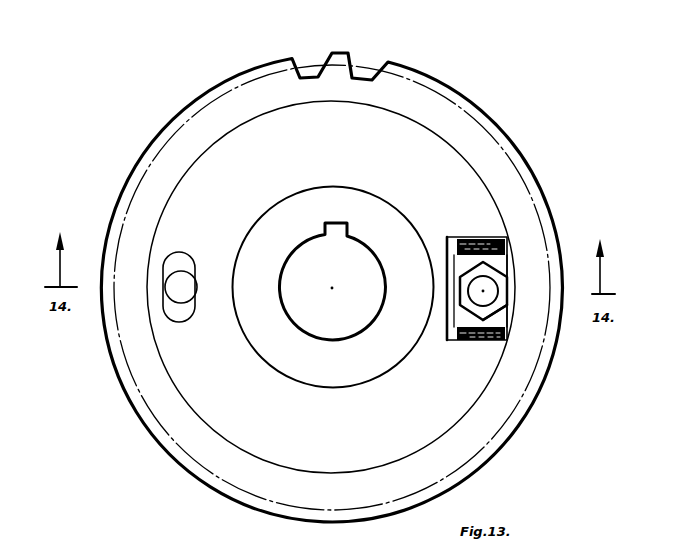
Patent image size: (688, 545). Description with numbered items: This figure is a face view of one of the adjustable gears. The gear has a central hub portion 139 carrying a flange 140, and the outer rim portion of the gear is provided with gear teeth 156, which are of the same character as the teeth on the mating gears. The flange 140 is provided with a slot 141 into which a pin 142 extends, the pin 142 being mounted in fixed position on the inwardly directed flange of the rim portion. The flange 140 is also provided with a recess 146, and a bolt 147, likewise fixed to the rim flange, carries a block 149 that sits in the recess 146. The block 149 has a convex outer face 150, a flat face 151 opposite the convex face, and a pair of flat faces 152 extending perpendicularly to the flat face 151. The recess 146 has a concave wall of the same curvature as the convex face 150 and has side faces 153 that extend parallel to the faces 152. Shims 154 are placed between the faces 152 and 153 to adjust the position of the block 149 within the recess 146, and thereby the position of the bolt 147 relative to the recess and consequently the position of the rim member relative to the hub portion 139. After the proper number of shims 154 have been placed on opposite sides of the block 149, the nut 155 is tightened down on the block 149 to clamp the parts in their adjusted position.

The central hub portion 139 is at (357, 205).
The flange 140 is at (468, 407).
The slot 141 is at (190, 310).
The pin 142 is at (188, 283).
The recess 146 is at (449, 245).
The bolt 147 is at (480, 293).
The block 149 is at (503, 262).
The convex outer face 150 is at (512, 297).
The flat face 151 is at (454, 298).
The flat faces 152 is at (507, 248).
The side faces 153 is at (467, 240).
The shims 154 is at (475, 238).
The nut 155 is at (497, 307).
The gear teeth 156 is at (342, 58).